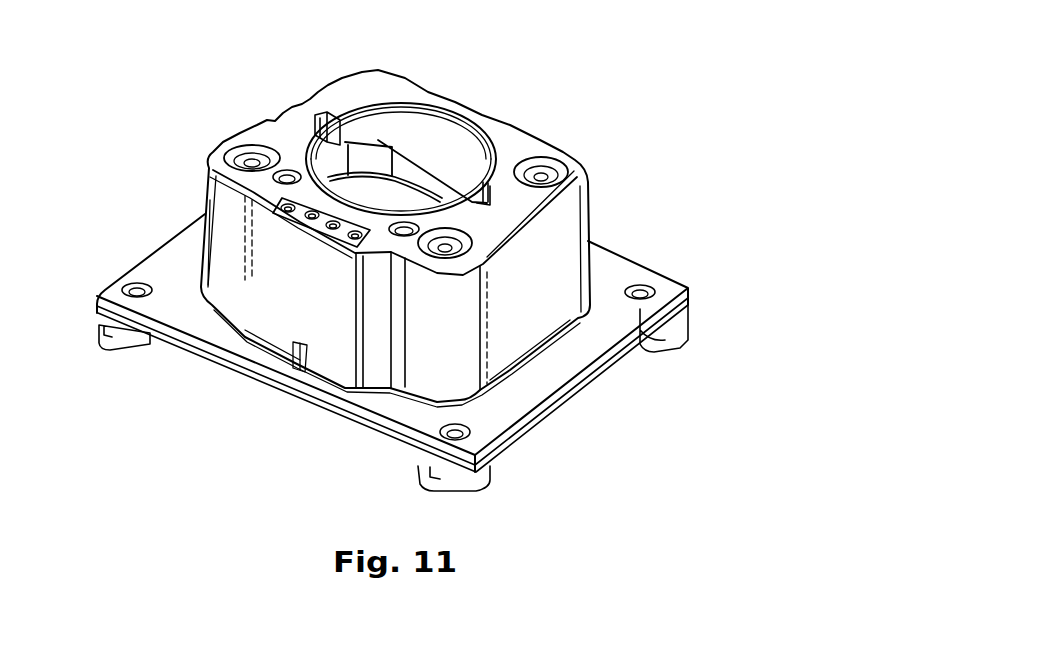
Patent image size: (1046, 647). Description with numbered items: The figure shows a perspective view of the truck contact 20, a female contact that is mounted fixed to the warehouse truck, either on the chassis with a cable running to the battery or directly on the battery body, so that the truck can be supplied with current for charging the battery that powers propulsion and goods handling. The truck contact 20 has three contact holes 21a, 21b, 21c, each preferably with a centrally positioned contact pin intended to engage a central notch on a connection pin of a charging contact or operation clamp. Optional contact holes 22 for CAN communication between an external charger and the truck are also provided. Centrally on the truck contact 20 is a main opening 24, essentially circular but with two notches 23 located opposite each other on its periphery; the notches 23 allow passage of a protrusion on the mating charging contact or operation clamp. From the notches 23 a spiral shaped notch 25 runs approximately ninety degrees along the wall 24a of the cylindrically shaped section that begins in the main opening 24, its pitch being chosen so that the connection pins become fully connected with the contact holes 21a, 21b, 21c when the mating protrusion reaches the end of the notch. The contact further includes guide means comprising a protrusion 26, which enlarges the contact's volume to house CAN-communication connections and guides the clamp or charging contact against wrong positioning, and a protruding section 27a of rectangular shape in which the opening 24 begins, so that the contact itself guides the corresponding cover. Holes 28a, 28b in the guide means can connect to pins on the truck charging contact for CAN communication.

The truck contact 20 is at (563, 117).
The contact hole 21a is at (248, 160).
The contact hole 21b is at (445, 250).
The contact hole 21c is at (560, 173).
The contact holes 22 is at (342, 230).
The notches 23 is at (320, 133).
The main opening 24 is at (420, 108).
The wall 24a is at (432, 158).
The spiral shaped notch 25 is at (377, 147).
The protrusion 26 is at (310, 303).
The protruding section 27a is at (552, 263).
The hole 28a is at (288, 180).
The hole 28b is at (410, 237).